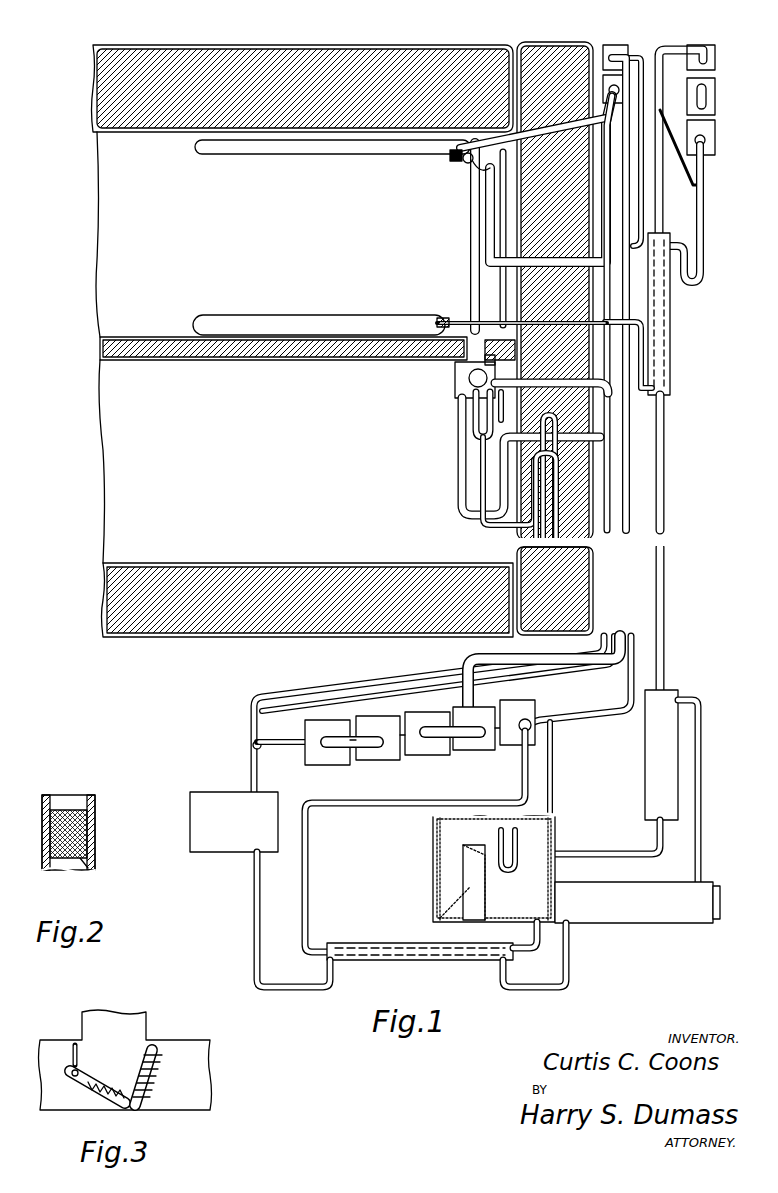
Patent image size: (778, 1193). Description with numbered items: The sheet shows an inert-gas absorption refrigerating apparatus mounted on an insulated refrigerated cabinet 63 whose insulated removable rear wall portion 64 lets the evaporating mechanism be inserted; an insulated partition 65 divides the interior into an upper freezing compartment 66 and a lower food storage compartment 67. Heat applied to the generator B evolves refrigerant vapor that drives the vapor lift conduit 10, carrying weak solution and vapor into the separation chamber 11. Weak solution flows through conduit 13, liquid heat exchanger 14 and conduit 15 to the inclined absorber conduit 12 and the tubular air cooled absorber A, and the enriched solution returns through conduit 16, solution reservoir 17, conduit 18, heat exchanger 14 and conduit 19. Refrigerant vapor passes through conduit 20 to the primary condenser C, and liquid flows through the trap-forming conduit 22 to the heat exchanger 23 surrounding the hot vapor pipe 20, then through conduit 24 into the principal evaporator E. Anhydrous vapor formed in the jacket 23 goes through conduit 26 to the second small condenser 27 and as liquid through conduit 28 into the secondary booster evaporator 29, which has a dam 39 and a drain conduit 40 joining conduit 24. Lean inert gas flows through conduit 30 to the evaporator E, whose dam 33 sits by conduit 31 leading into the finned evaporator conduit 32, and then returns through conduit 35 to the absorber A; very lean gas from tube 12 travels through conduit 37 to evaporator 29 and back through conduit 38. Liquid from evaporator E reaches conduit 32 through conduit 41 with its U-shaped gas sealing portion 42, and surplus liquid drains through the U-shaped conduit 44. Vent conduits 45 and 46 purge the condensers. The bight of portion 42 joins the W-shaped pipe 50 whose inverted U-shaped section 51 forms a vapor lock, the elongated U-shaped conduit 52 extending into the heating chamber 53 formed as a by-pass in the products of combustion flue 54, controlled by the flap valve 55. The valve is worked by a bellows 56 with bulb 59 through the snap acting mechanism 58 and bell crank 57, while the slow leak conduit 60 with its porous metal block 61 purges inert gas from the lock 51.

In FIG. 1, the vapor lift conduit 10 is at (702, 820).
In FIG. 1, the separation chamber 11 is at (648, 750).
In FIG. 1, the inclined air cooled absorber conduit 12 is at (522, 735).
In FIG. 1, the conduit 13 is at (590, 835).
In FIG. 1, the liquid heat exchanger 14 is at (437, 958).
In FIG. 1, the conduit 15 is at (309, 862).
In FIG. 1, the conduit 16 is at (262, 775).
In FIG. 1, the solution reservoir 17 is at (234, 822).
In FIG. 1, the conduit 18 is at (320, 988).
In FIG. 1, the conduit 19 is at (572, 958).
In FIG. 1, the conduit 20 is at (665, 482).
In FIG. 1, the U-shaped liquid sealed trap forming conduit 22 is at (708, 245).
In FIG. 1, the heat exchanger 23 is at (672, 345).
In FIG. 1, the conduit 24 is at (645, 380).
In FIG. 1, the conduit 26 is at (665, 45).
In FIG. 1, the second small condenser 27 is at (615, 45).
In FIG. 1, the conduit 28 is at (487, 188).
In FIG. 1, the secondary booster evaporator 29 is at (372, 150).
In FIG. 1, the conduit 30 is at (476, 660).
In FIG. 1, the conduit 31 is at (470, 380).
In FIG. 1, the finned air cooling evaporator conduit 32 is at (474, 390).
In FIG. 1, the dam 33 is at (467, 318).
In FIG. 1, the conduit 35 is at (613, 430).
In FIG. 1, the conduit 37 is at (625, 688).
In FIG. 1, the conduit 38 is at (470, 245).
In FIG. 1, the dam 39 is at (446, 156).
In FIG. 1, the drain conduit 40 is at (498, 280).
In FIG. 1, the conduit 41 is at (486, 362).
In FIG. 1, the U-shaped gas sealing portion 42 is at (476, 428).
In FIG. 1, the U-shaped gas sealing conduit 44 is at (460, 492).
In FIG. 1, the vent conduit 45 is at (683, 195).
In FIG. 1, the vent conduit 46 is at (462, 166).
In FIG. 1, the W-shaped pipe 50 is at (482, 458).
In FIG. 1, the inverted U-shaped section 51 is at (562, 455).
In FIG. 1, the elongated U-shaped conduit 52 is at (554, 782).
In FIG. 1, the heating chamber 53 is at (518, 848).
In FIG. 1, the products of combustion discharge flue 54 is at (433, 865).
In FIG. 1, the flap valve 55 is at (488, 908).
In FIG. 3, the bellows 56 is at (160, 1085).
In FIG. 3, the actuating bell crank 57 is at (78, 1050).
In FIG. 3, the snap acting mechanism 58 is at (103, 1075).
In FIG. 1, the bulb 59 is at (497, 408).
In FIG. 1, the slow leak conduit 60 is at (556, 412).
In FIG. 2, the slow leak conduit 60 is at (95, 812).
In FIG. 2, the porous metal block 61 is at (88, 868).
In FIG. 1, the insulated refrigerated cabinet 63 is at (373, 42).
In FIG. 1, the insulated removable rear wall portion 64 is at (550, 42).
In FIG. 1, the insulated partition 65 is at (185, 360).
In FIG. 1, the upper freezing compartment 66 is at (210, 228).
In FIG. 1, the lower food storage compartment 67 is at (168, 459).
In FIG. 1, the tubular air cooled absorber A is at (432, 750).
In FIG. 1, the generator B is at (637, 902).
In FIG. 1, the primary condenser C is at (712, 100).
In FIG. 1, the principal evaporator E is at (305, 315).